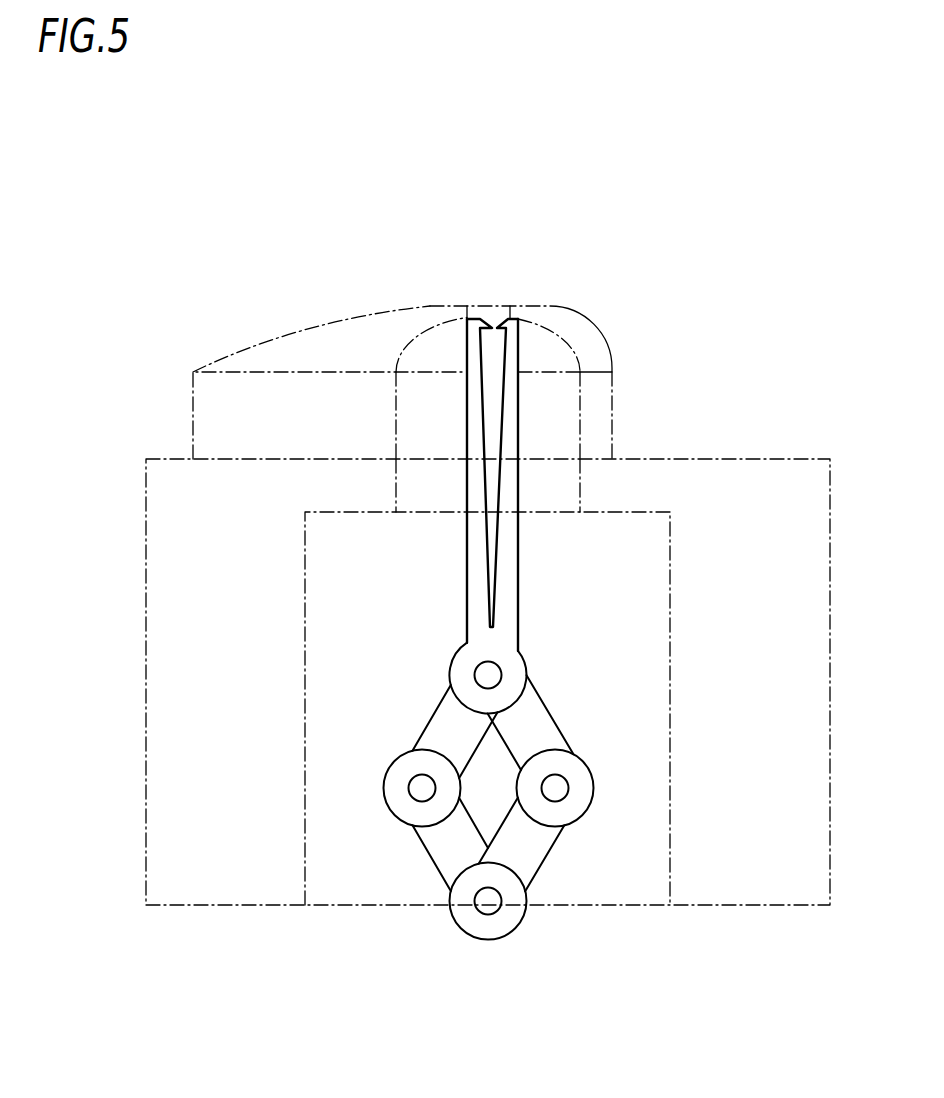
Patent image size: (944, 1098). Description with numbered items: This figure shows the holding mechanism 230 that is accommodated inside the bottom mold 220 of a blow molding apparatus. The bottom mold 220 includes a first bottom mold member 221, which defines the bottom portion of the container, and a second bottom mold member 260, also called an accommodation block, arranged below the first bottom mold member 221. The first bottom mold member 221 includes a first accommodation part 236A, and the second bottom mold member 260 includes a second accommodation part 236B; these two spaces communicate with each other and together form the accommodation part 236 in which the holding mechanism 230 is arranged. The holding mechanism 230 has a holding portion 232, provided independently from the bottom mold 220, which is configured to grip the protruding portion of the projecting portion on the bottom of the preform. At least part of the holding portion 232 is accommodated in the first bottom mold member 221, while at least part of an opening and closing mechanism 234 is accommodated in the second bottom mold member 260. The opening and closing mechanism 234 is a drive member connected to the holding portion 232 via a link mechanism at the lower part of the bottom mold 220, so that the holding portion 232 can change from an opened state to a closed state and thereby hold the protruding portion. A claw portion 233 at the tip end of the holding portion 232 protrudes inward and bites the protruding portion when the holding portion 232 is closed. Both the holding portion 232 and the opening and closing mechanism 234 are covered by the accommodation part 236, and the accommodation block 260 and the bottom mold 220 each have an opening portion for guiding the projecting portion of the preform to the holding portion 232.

The bottom mold 220 is at (793, 290).
The first bottom mold member 221 is at (600, 345).
The holding mechanism 230 is at (467, 408).
The holding portion 232 is at (513, 354).
The claw portion 233 is at (498, 322).
The opening and closing mechanism 234 is at (555, 724).
The accommodation part 236 is at (660, 477).
The first accommodation part 236A is at (413, 427).
The second accommodation part 236B is at (362, 582).
The second bottom mold member 260 is at (787, 457).